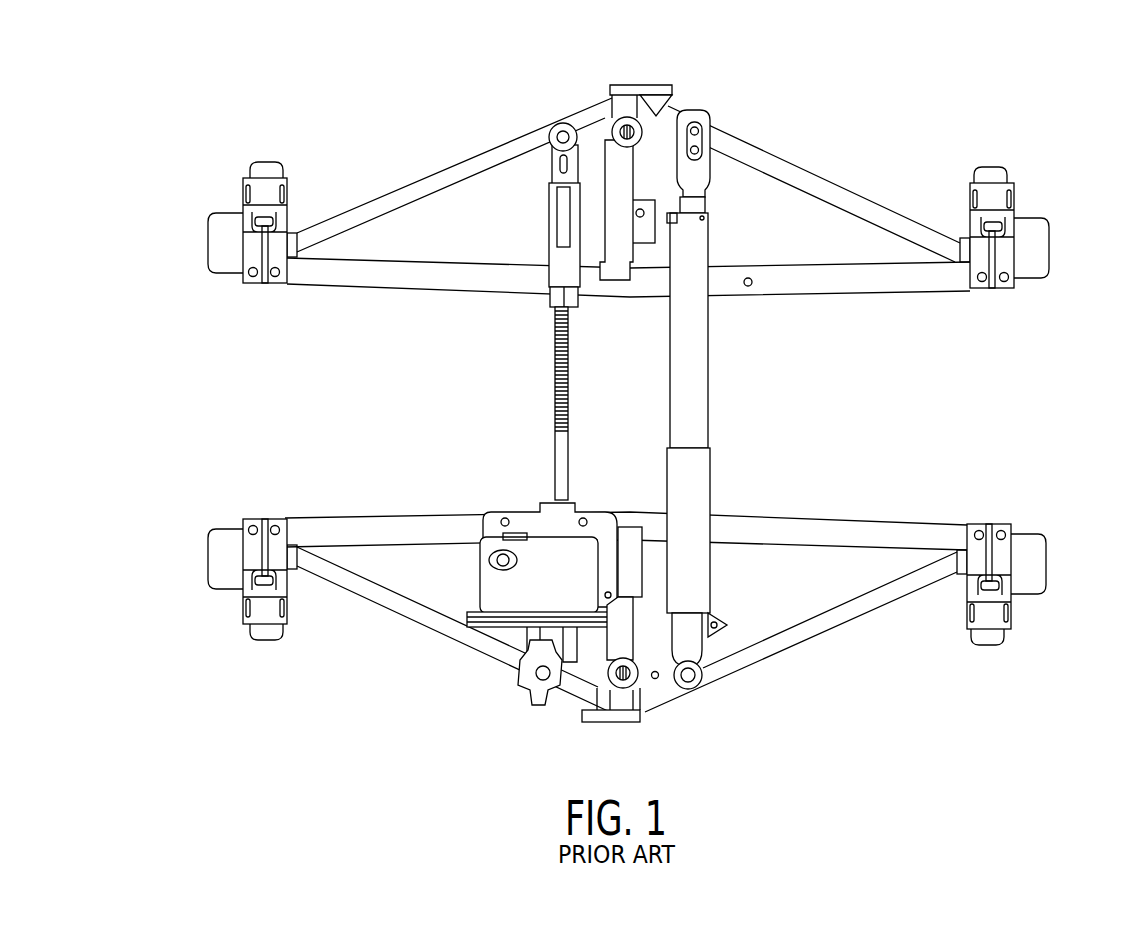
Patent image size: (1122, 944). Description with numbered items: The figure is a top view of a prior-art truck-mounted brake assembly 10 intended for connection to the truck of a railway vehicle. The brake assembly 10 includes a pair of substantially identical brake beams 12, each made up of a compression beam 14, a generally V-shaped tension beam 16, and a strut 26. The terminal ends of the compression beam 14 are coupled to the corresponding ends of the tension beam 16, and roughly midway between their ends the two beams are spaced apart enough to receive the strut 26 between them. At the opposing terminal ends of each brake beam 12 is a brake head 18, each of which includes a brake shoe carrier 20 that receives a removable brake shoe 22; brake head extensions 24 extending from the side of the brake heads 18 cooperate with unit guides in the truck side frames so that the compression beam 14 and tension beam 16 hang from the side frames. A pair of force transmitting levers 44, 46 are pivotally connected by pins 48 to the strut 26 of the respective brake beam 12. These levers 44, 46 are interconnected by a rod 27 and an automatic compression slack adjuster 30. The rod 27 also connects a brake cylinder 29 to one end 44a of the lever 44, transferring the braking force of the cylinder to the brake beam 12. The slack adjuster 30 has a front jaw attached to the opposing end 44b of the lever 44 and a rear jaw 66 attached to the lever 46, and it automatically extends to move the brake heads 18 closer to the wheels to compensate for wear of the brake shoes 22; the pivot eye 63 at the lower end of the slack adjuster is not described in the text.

The truck-mounted brake assembly 10 is at (215, 143).
The brake beam 12 is at (440, 115).
The compression beam 14 is at (397, 278).
The tension beam 16 is at (412, 195).
The brake head 18 is at (263, 284).
The brake shoe carrier 20 is at (248, 215).
The brake shoe 22 is at (268, 163).
The brake head extension 24 is at (215, 252).
The strut 26 is at (620, 273).
The rod 27 is at (558, 372).
The brake cylinder 29 is at (540, 548).
The automatic compression slack adjuster 30 is at (706, 405).
The force transmitting lever 44 is at (598, 703).
The end of force transmitting lever 44a is at (540, 688).
The opposing end of force transmitting lever 44b is at (660, 690).
The force transmitting lever 46 is at (592, 127).
The pin 48 is at (639, 103).
The pivot eye 63 is at (705, 682).
The rear jaw 66 is at (712, 113).